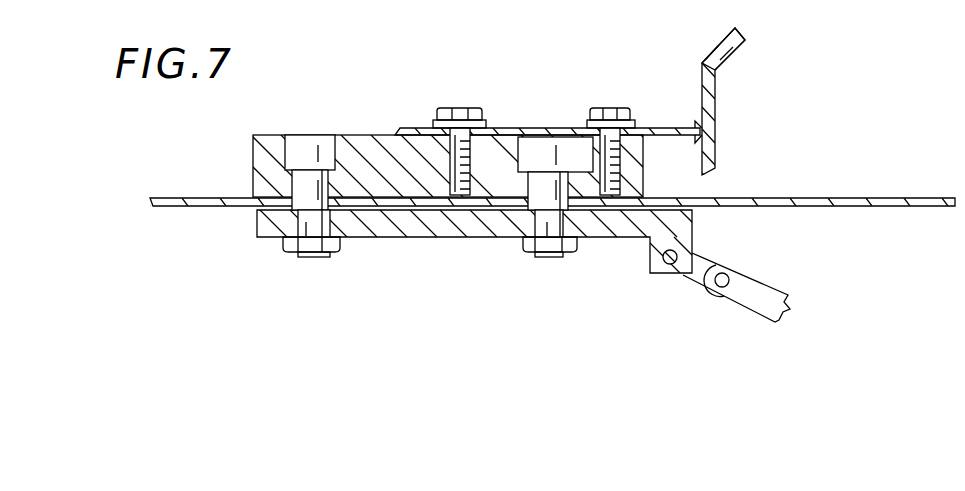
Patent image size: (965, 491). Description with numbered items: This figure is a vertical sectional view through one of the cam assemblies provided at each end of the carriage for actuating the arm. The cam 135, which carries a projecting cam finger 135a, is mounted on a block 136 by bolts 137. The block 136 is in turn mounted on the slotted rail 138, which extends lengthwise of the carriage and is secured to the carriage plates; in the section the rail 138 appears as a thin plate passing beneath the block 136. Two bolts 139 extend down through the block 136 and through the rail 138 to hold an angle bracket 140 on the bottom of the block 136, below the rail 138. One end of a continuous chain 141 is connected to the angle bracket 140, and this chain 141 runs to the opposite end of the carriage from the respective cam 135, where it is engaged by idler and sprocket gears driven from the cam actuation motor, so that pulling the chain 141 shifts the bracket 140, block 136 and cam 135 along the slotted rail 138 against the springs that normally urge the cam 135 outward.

The cam 135 is at (547, 78).
The cam finger 135a is at (724, 50).
The block 136 is at (400, 103).
The bolt 137 is at (480, 80).
The slotted rail 138 is at (850, 210).
The bolt 139 is at (325, 207).
The angle bracket 140 is at (673, 230).
The continuous chain 141 is at (723, 297).